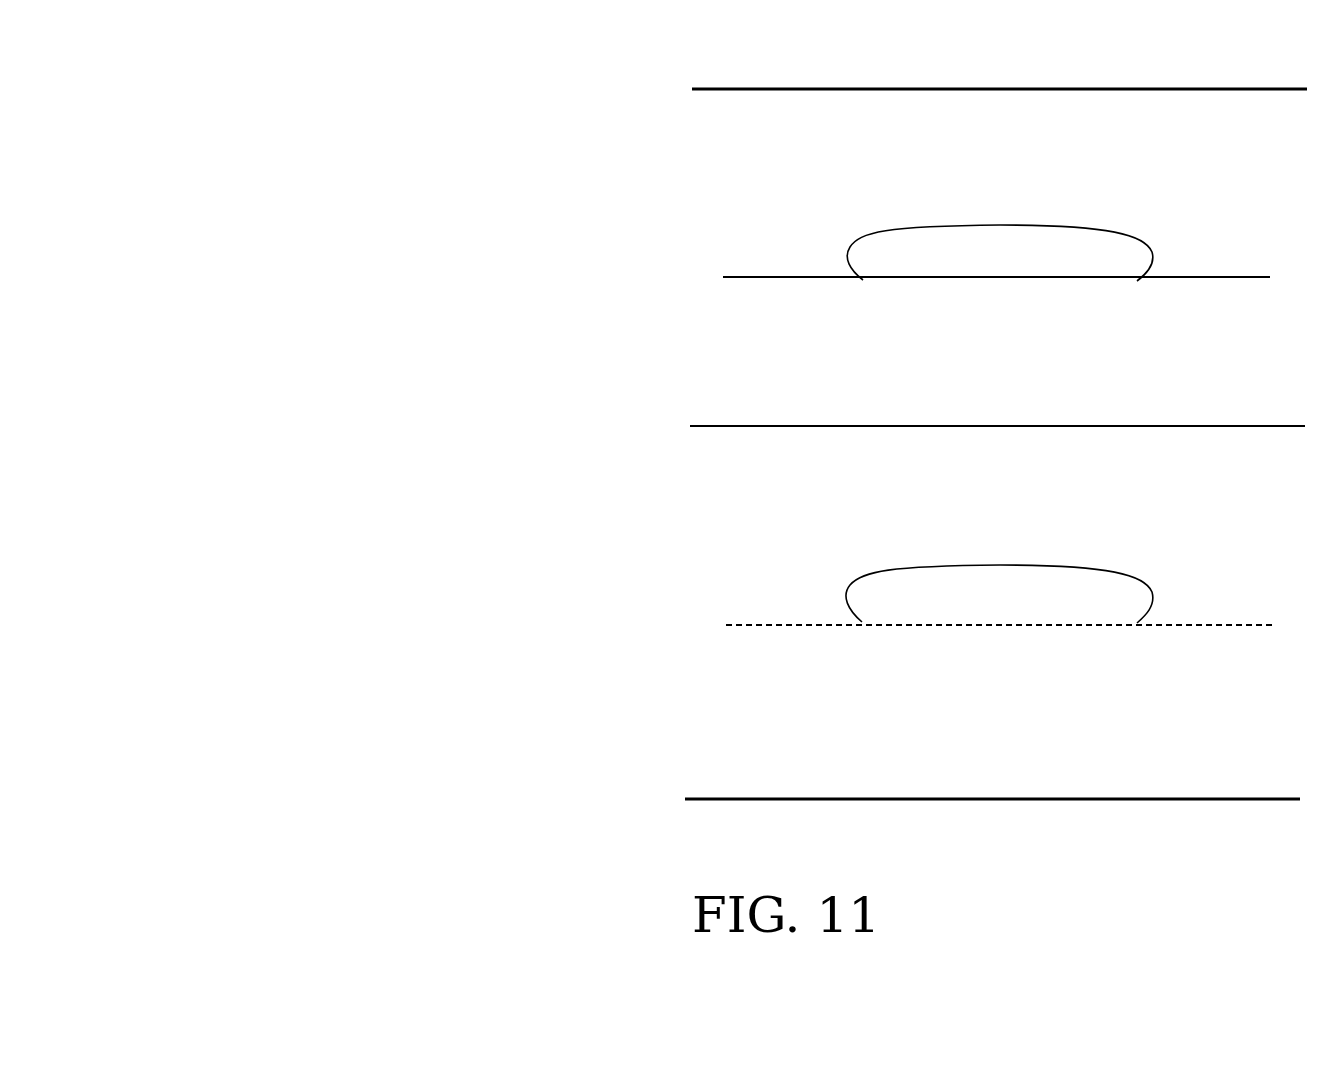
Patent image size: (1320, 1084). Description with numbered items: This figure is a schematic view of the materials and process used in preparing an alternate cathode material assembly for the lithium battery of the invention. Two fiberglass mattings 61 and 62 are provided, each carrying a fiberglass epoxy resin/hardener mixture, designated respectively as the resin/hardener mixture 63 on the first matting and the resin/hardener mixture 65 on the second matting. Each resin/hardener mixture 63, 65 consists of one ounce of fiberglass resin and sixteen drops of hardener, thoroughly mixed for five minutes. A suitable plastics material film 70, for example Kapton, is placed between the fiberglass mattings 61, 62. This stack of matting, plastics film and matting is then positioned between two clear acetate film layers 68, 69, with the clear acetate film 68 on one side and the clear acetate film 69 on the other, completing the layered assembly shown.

The clear acetate film layer 68 is at (643, 87).
The fiberglass epoxy resin/hardener mixture 63 is at (890, 232).
The fiberglass matting 61 is at (640, 285).
The plastics material film 70 is at (617, 426).
The fiberglass epoxy resin/hardener mixture 65 is at (888, 560).
The fiberglass matting 62 is at (640, 624).
The clear acetate film layer 69 is at (648, 787).